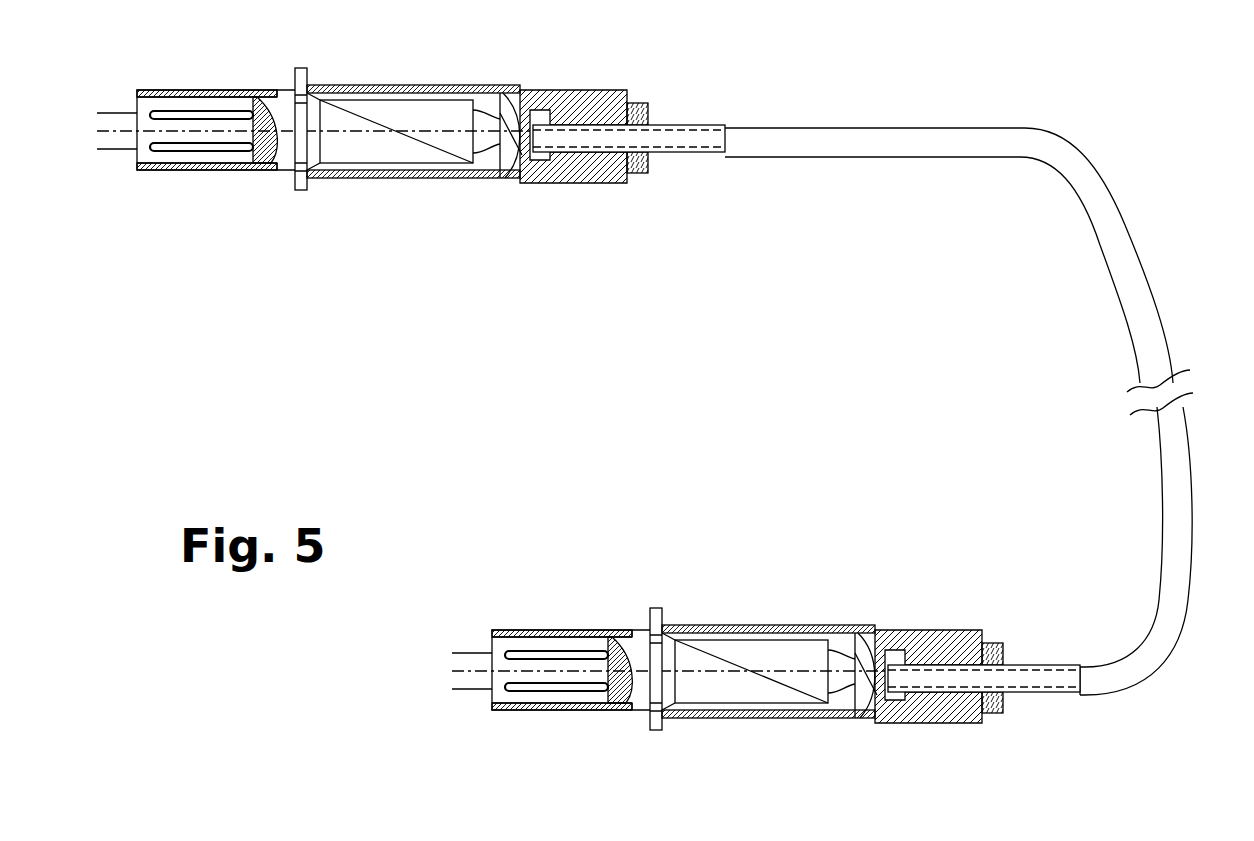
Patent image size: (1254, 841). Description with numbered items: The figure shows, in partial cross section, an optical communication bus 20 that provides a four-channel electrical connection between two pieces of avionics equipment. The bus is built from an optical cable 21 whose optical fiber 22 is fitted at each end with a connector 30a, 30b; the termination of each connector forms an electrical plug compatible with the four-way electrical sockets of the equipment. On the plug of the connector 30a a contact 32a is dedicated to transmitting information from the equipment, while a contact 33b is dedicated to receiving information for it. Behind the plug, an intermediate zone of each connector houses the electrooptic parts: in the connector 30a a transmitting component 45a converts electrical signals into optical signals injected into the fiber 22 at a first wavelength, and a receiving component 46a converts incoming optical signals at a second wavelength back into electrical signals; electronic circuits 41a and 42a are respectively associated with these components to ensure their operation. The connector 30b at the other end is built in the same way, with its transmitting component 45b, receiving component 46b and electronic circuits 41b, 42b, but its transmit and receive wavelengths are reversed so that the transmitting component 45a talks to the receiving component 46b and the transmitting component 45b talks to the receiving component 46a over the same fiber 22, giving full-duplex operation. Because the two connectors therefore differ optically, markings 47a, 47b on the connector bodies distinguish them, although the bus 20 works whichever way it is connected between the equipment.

The optical communication bus 20 is at (976, 99).
The optical cable 21 is at (1122, 229).
The optical fiber 22 is at (1058, 670).
The connector 30a is at (346, 66).
The connector 30b is at (766, 663).
The contact 32a is at (163, 114).
The contact 33b is at (192, 152).
The electronic circuit 41a is at (434, 89).
The electronic circuit 41b is at (768, 650).
The electronic circuit 42a is at (372, 155).
The electronic circuit 42b is at (751, 710).
The optical-signal-transmitting component 45a is at (519, 89).
The optical-signal-transmitting component 45b is at (876, 650).
The optical-signal-receiving component 46a is at (507, 160).
The optical-signal-receiving component 46b is at (852, 715).
The marking 47a is at (588, 82).
The marking 47b is at (977, 639).